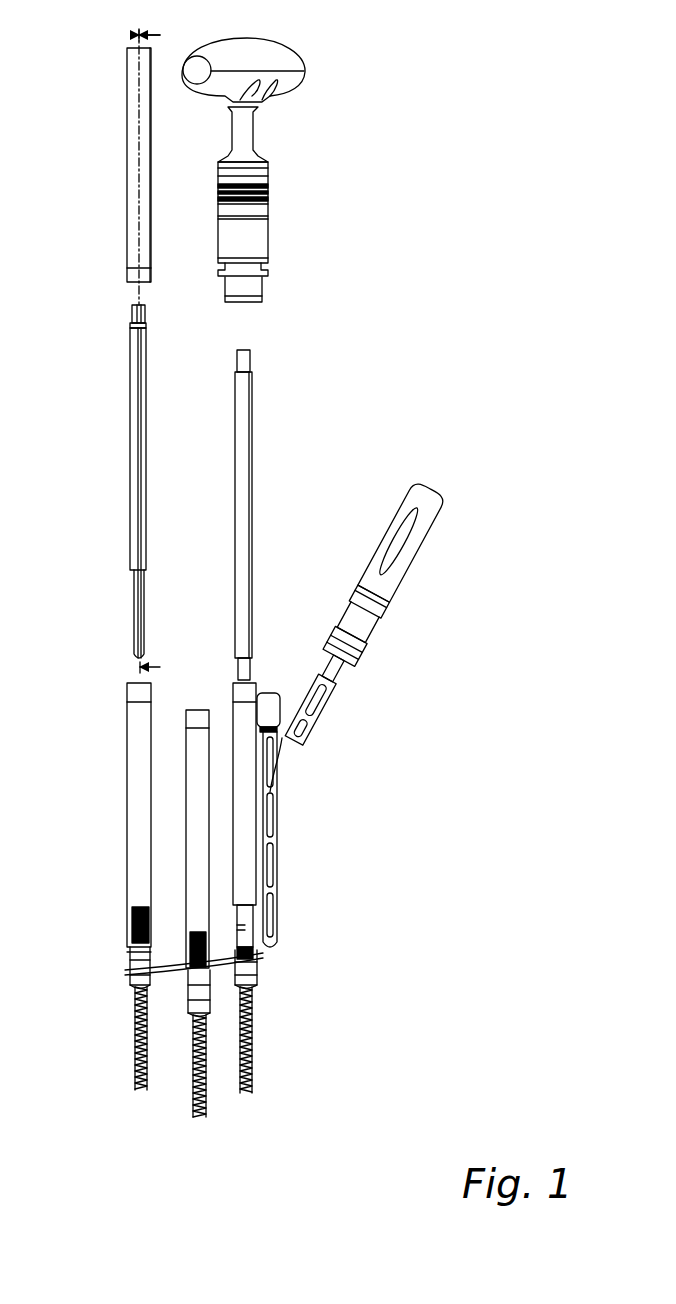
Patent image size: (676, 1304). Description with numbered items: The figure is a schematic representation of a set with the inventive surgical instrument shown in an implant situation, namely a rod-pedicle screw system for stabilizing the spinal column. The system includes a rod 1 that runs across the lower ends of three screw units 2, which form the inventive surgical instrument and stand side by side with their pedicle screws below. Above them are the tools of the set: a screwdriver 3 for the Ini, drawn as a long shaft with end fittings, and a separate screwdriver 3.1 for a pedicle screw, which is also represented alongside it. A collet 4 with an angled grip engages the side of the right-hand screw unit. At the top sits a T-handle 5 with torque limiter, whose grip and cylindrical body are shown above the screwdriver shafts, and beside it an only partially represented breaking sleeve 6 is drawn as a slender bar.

The rod 1 is at (163, 975).
The screw units 2 is at (234, 773).
The screwdriver for the Ini 3 is at (245, 500).
The screwdriver for a pedicle screw 3.1 is at (137, 435).
The collet 4 is at (290, 751).
The T-handle with torque limiter 5 is at (262, 210).
The breaking sleeve 6 is at (132, 142).